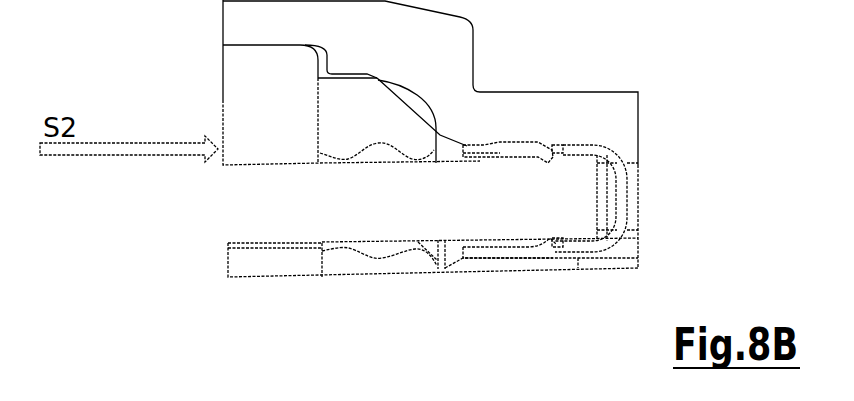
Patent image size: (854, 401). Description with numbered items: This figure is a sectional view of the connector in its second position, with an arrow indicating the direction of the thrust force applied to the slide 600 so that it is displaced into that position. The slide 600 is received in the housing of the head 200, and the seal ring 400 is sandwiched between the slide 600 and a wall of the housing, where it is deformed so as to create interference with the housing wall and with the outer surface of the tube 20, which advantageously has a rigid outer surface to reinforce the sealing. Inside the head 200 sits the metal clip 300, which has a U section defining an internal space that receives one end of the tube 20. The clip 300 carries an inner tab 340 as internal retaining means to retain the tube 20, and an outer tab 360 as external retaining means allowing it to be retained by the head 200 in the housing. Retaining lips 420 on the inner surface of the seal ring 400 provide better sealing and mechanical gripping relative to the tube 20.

The tube 20 is at (255, 213).
The head 200 is at (583, 107).
The clip 300 is at (622, 183).
The inner tab 340 is at (550, 240).
The outer tab 360 is at (483, 145).
The seal ring 400 is at (388, 107).
The retaining lips 420 is at (403, 162).
The slide 600 is at (252, 89).